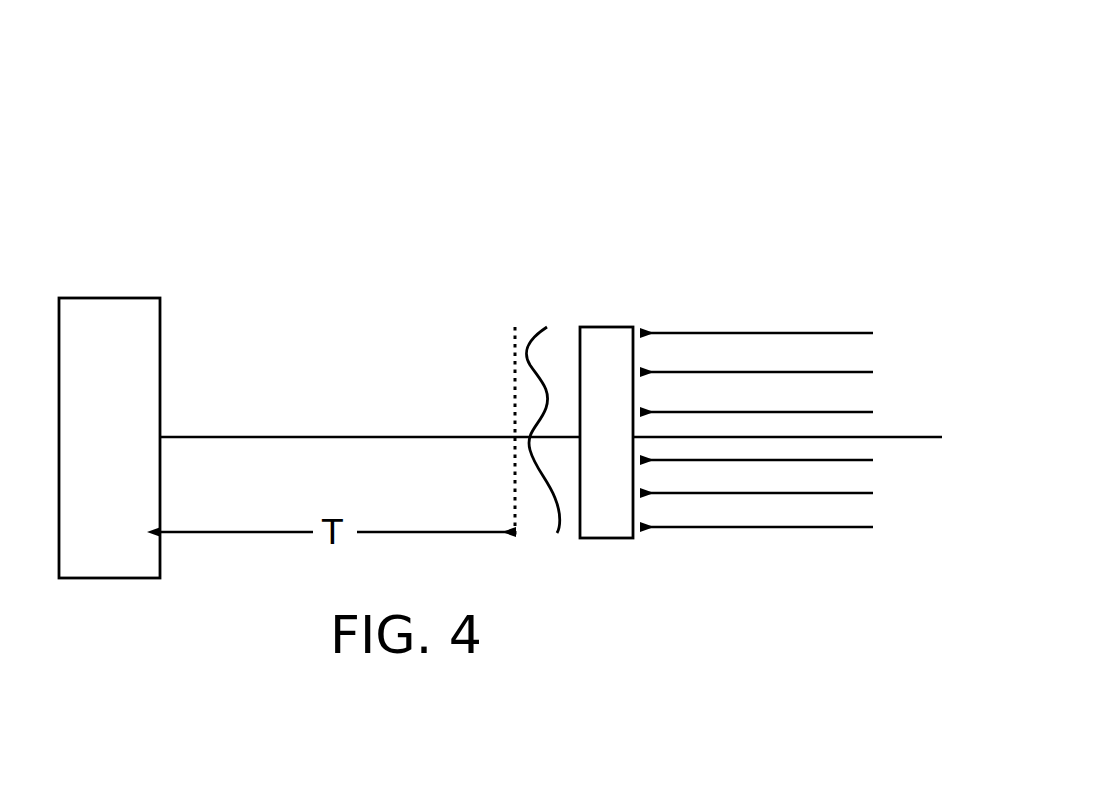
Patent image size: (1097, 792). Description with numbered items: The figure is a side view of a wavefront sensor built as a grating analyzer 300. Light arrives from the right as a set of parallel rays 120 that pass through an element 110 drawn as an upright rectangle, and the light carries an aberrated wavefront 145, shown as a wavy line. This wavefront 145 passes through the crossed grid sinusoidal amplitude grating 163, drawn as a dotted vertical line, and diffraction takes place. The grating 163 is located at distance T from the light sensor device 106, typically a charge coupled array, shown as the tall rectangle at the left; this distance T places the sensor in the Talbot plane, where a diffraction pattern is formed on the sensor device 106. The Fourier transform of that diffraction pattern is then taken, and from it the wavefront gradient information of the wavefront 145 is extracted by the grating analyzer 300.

The grating analyzer 300 is at (739, 108).
The light sensor device 106 is at (103, 298).
The optical element 110 is at (610, 327).
The incident light 120 is at (763, 333).
The aberrated wavefront 145 is at (547, 327).
The crossed grid sinusoidal amplitude grating 163 is at (513, 345).